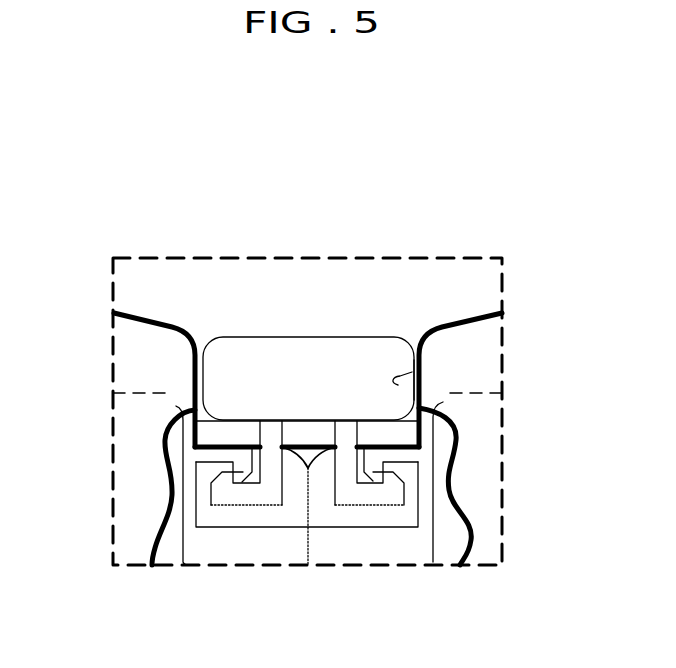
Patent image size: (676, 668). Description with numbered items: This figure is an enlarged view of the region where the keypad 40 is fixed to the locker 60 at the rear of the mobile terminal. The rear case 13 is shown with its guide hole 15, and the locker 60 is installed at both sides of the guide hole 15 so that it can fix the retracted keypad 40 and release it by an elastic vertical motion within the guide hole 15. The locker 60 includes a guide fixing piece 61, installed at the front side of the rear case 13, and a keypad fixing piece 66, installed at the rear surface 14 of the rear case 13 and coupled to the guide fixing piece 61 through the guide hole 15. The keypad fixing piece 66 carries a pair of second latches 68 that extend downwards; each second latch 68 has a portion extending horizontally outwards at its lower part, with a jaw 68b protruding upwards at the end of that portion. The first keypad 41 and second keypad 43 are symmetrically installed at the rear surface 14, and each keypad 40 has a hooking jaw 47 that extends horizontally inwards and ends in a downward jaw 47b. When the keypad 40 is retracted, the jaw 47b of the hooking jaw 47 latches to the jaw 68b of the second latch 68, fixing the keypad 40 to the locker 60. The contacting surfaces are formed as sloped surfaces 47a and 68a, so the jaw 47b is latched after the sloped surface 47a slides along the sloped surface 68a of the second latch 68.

The rear case 13 is at (483, 290).
The rear surface 14 is at (147, 275).
The guide hole 15 is at (398, 385).
The keypad 40 is at (120, 571).
The first keypad 41 is at (483, 505).
The second keypad 43 is at (132, 507).
The hooking jaw 47 is at (192, 411).
The sloped surface 47a is at (370, 473).
The jaw 47b is at (377, 478).
The locker 60 is at (311, 323).
The guide fixing piece 61 is at (358, 337).
The keypad fixing piece 66 is at (233, 348).
The second latch 68 is at (252, 505).
The sloped surface 68a is at (222, 470).
The jaw 68b is at (222, 497).